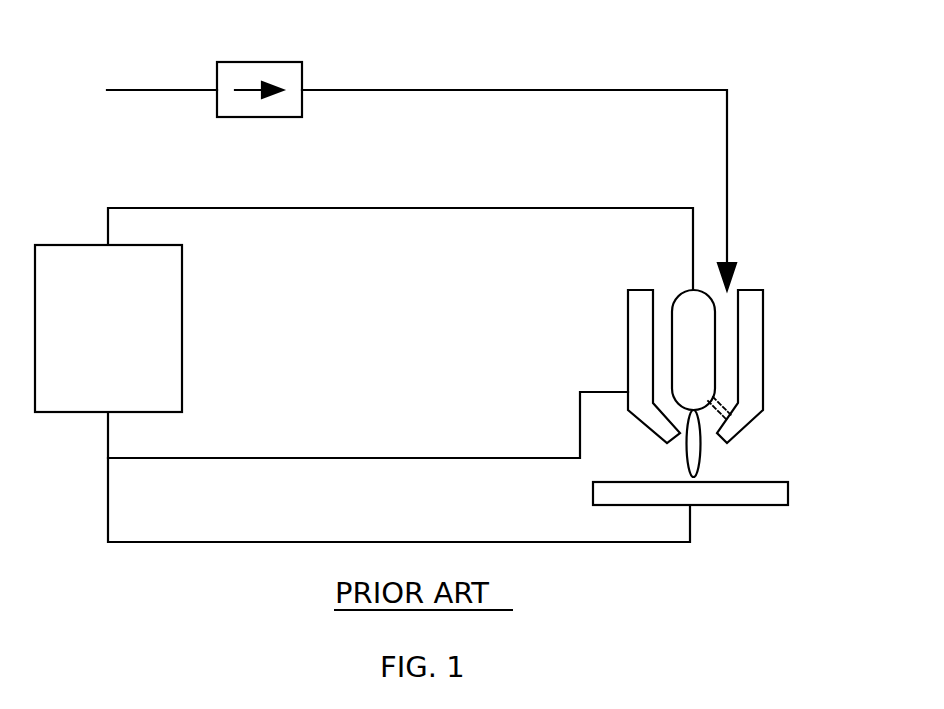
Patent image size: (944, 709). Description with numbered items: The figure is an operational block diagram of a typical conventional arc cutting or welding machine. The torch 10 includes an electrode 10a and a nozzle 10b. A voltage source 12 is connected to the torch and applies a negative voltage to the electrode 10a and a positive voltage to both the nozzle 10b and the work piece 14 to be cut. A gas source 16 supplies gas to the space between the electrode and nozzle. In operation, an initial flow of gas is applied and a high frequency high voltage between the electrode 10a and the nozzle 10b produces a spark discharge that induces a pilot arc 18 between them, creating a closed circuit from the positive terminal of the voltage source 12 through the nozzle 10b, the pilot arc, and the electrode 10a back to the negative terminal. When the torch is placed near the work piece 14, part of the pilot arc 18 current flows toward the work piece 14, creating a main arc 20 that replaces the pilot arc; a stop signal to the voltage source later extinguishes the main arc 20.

The torch 10 is at (729, 297).
The electrode 10a is at (651, 330).
The nozzle 10b is at (742, 362).
The voltage source 12 is at (148, 329).
The work piece 14 is at (737, 473).
The gas source 16 is at (303, 72).
The pilot arc 18 is at (781, 385).
The main arc 20 is at (736, 443).